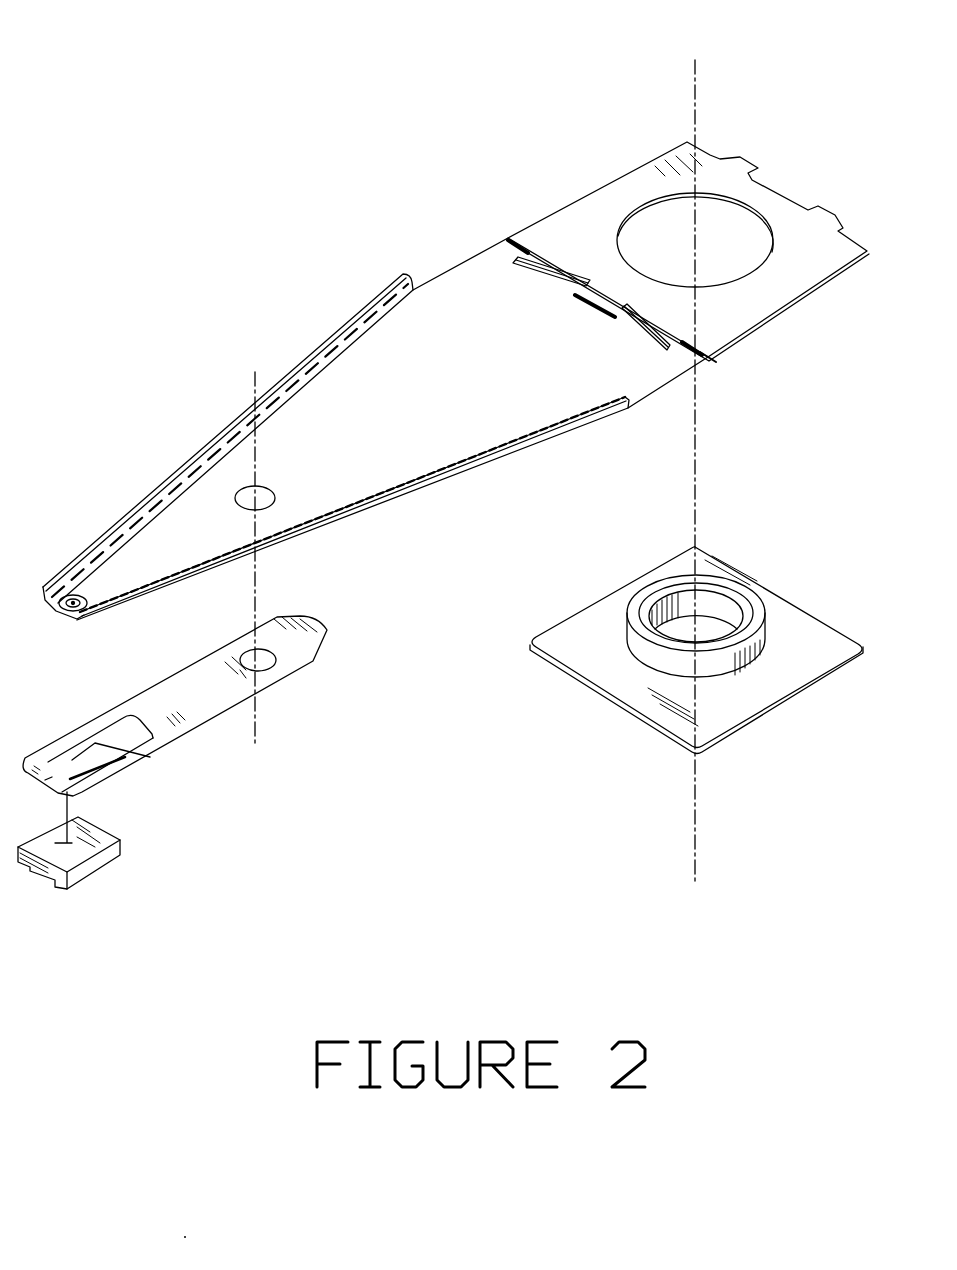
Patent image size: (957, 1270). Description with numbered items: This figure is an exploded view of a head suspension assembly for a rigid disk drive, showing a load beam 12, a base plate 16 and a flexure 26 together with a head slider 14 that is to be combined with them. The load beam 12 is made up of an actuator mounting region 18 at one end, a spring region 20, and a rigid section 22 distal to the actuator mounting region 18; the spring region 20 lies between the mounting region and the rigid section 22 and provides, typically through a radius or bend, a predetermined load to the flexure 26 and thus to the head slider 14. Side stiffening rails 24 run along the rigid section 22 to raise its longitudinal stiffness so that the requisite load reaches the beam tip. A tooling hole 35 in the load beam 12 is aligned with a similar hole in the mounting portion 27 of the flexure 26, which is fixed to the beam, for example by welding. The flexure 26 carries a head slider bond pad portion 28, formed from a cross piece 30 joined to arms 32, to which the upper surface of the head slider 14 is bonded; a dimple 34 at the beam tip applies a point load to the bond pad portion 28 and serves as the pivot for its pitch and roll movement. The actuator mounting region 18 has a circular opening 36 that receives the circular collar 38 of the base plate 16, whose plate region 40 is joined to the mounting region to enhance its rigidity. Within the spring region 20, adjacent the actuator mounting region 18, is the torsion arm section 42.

The load beam 12 is at (357, 402).
The head slider 14 is at (79, 857).
The base plate 16 is at (675, 656).
The actuator mounting region 18 is at (767, 198).
The spring region 20 is at (704, 357).
The rigid section 22 is at (372, 440).
The stiffening rails 24 is at (182, 463).
The flexure 26 is at (305, 663).
The mounting portion 27 is at (188, 682).
The head slider bond pad portion 28 is at (100, 756).
The cross piece 30 is at (48, 781).
The arms 32 is at (103, 728).
The dimple 34 is at (67, 602).
The tooling hole 35 is at (240, 492).
The circular opening 36 is at (752, 273).
The circular collar 38 is at (752, 592).
The plate region 40 is at (783, 673).
The torsion arm section 42 is at (508, 238).